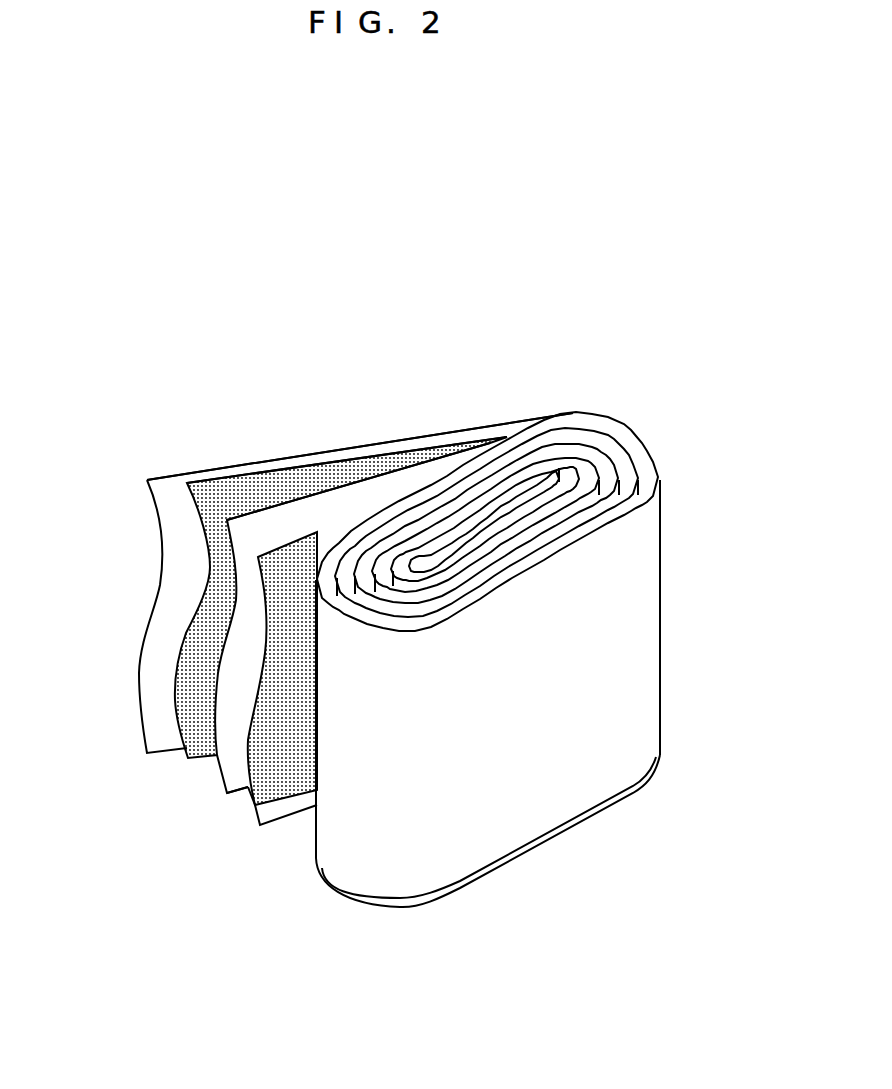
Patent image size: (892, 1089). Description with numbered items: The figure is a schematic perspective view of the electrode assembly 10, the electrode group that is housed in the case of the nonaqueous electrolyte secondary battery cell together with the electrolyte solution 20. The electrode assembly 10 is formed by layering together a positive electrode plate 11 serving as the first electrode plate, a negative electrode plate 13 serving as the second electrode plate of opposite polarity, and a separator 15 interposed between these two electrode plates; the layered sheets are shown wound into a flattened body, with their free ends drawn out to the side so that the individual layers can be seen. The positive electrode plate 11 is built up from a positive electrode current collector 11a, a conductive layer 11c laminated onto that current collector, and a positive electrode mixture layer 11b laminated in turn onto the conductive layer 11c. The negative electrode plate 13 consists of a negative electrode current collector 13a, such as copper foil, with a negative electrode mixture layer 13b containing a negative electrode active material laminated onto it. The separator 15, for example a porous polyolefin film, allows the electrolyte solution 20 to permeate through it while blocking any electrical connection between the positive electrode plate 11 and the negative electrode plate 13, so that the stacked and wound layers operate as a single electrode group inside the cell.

The electrode assembly 10 is at (630, 322).
The electrolyte solution 20 is at (135, 548).
The positive electrode plate 11 is at (258, 775).
The positive electrode current collector 11a is at (293, 807).
The positive electrode mixture layer 11b is at (248, 807).
The conductive layer 11c is at (240, 800).
The negative electrode plate 13 is at (190, 695).
The negative electrode current collector 13a is at (243, 480).
The negative electrode mixture layer 13b is at (302, 488).
The separator 15 is at (250, 575).